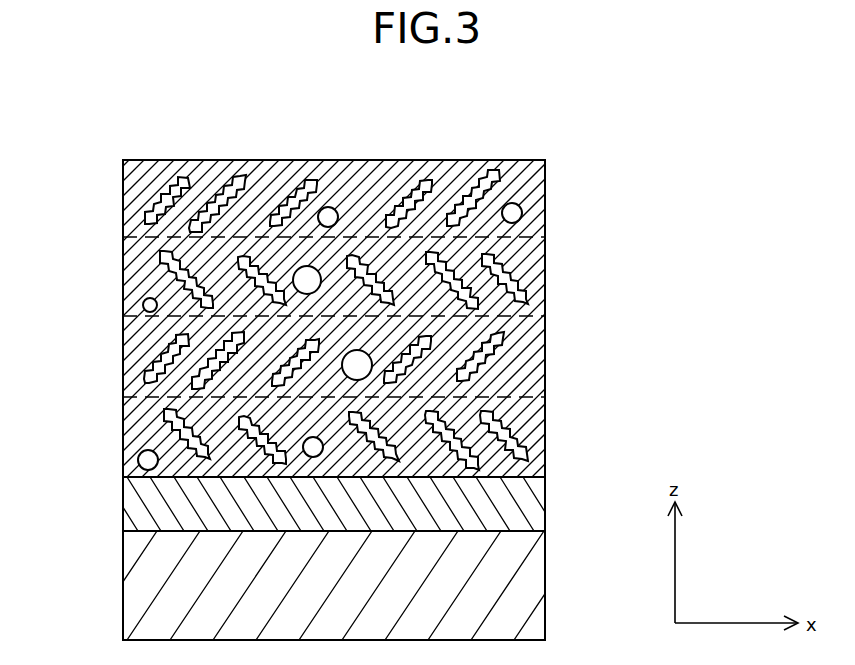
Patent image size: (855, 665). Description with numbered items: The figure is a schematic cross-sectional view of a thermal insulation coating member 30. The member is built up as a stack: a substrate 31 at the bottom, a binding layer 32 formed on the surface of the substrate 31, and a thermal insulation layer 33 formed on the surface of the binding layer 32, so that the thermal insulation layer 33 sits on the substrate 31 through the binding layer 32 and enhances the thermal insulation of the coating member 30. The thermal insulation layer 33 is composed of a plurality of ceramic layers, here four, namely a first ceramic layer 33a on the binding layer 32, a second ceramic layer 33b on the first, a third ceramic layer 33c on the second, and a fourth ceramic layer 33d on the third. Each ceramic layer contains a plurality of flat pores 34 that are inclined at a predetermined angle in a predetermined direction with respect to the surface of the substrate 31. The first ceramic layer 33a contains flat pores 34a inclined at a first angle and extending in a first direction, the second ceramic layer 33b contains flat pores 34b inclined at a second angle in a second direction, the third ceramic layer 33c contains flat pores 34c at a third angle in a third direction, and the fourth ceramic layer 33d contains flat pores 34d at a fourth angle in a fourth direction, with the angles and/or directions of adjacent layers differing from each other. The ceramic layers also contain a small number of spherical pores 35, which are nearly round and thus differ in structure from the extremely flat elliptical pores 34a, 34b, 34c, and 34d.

The thermal insulation coating member 30 is at (486, 118).
The substrate 31 is at (515, 583).
The binding layer 32 is at (515, 500).
The thermal insulation layer 33 is at (427, 318).
The first ceramic layer 33a is at (608, 162).
The second ceramic layer 33b is at (552, 320).
The third ceramic layer 33c is at (552, 240).
The fourth ceramic layer 33d is at (552, 162).
The flat pores 34 is at (270, 320).
The flat pores of the first ceramic layer 34a is at (294, 439).
The flat pores of the second ceramic layer 34b is at (166, 355).
The flat pores of the third ceramic layer 34c is at (170, 264).
The flat pores of the fourth ceramic layer 34d is at (166, 189).
The spherical pores 35 is at (138, 460).